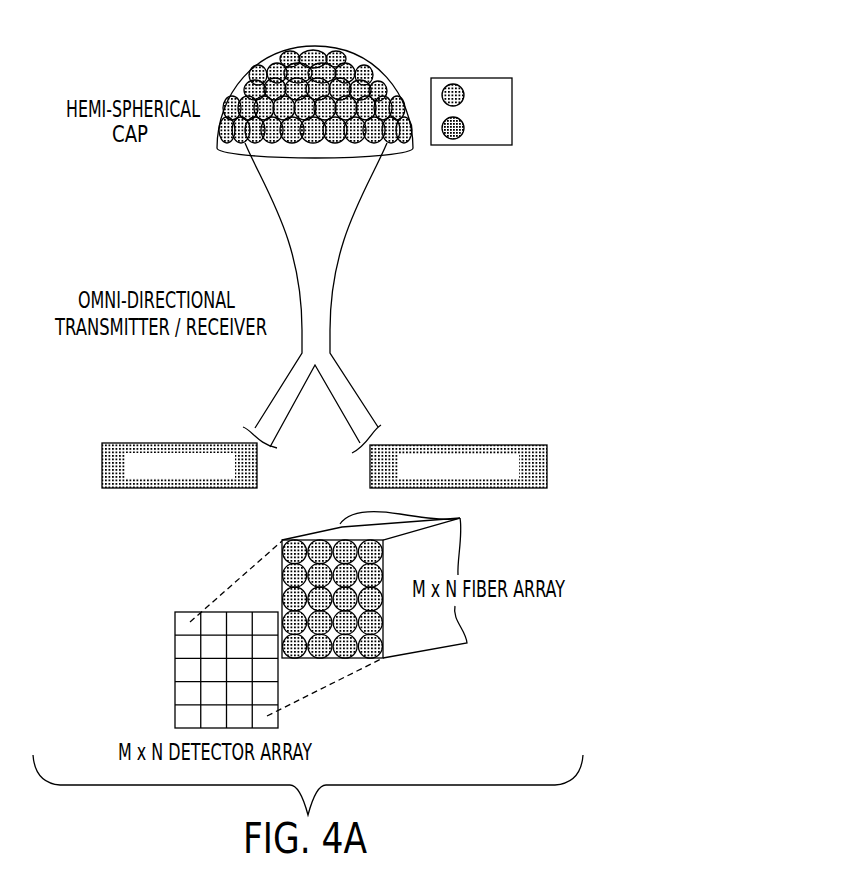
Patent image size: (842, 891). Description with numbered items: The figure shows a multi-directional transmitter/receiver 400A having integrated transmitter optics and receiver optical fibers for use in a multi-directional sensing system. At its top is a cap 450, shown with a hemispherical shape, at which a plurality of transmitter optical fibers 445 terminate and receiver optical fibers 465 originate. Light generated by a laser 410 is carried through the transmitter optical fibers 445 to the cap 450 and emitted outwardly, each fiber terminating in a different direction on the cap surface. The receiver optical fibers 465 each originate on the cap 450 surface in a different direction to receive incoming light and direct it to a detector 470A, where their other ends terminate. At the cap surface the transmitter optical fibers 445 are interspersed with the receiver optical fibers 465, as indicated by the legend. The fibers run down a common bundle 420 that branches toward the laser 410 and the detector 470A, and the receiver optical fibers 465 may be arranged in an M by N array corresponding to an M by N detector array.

The multi-directional transmitter/receiver 400A is at (203, 63).
The cap 450 is at (370, 65).
The fiber bundle Y-stem 420 is at (330, 282).
The laser 410 is at (178, 442).
The detector 470A is at (460, 444).
The transmitter optical fibers 445 is at (470, 94).
The receiver optical fibers 465 is at (470, 127).